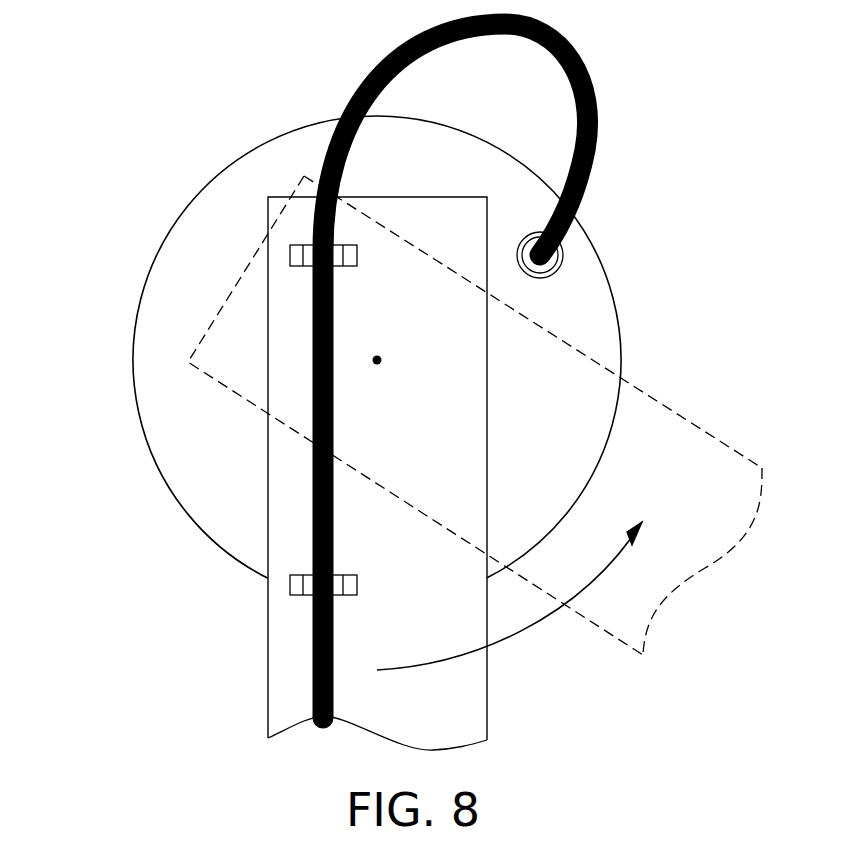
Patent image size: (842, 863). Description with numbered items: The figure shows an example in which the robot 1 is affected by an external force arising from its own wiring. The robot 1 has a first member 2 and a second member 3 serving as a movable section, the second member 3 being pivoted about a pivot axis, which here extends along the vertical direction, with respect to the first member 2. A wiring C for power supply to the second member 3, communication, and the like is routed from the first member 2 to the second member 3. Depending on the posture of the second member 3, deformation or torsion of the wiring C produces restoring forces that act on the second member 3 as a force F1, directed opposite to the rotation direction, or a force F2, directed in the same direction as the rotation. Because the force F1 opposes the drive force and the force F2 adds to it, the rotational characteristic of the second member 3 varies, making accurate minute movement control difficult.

The robot 1 is at (157, 135).
The first member 2 is at (208, 257).
The second member 3 is at (290, 493).
The wiring C is at (595, 145).
The force F1 is at (347, 703).
The force F2 is at (417, 703).